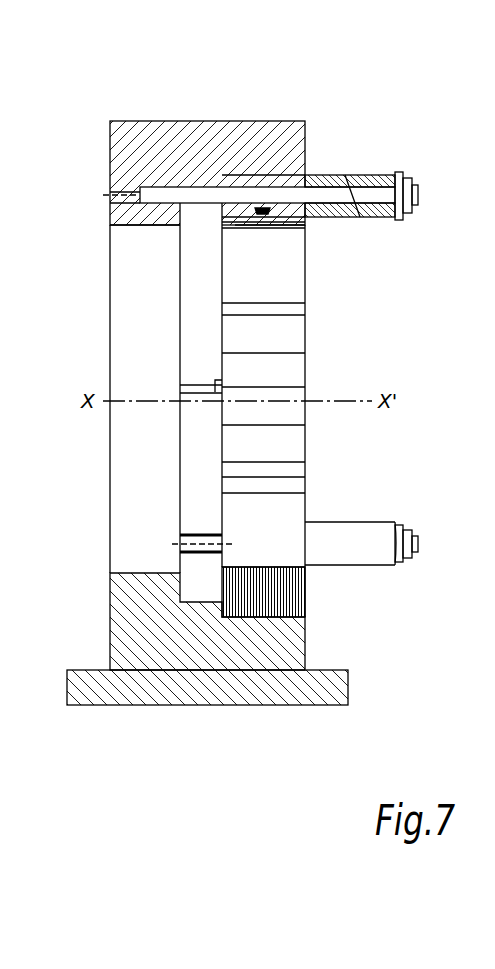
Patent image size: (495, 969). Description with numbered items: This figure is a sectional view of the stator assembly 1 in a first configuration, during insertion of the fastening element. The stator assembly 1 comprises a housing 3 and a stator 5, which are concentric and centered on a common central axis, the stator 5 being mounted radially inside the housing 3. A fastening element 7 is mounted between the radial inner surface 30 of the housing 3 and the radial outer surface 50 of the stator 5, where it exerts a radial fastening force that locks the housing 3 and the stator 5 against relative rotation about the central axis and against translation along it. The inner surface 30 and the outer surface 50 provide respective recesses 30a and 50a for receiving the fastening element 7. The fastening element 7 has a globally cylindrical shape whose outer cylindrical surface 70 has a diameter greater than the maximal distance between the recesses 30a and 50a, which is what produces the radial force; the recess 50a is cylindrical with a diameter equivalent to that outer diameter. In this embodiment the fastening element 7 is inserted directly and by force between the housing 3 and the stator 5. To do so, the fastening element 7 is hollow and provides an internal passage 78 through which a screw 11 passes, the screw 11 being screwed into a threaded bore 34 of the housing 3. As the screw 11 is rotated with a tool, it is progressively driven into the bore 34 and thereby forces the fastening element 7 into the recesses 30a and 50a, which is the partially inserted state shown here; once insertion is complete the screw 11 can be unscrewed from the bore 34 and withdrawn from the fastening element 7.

The stator assembly 1 is at (400, 99).
The housing 3 is at (204, 122).
The stator 5 is at (308, 266).
The fastening elements 7 is at (352, 176).
The screws 11 is at (403, 181).
The radial inner surface 30 is at (305, 586).
The recess 30a is at (259, 212).
The threaded bores 34 is at (126, 192).
The radial outer surface 50 is at (293, 616).
The recess 50a is at (256, 222).
The outer cylindrical surface 70 is at (335, 174).
The internal passage 78 is at (351, 188).